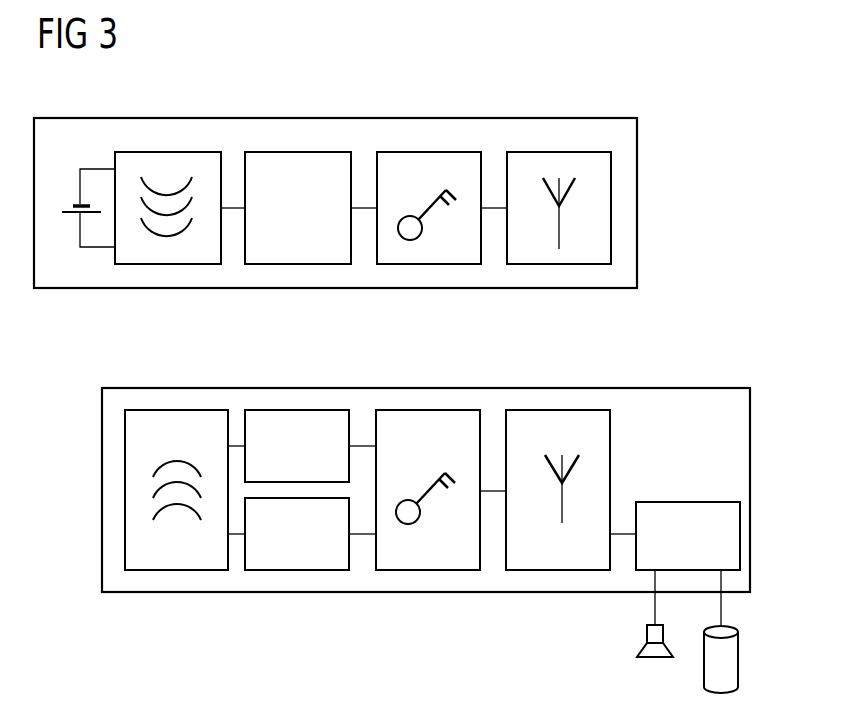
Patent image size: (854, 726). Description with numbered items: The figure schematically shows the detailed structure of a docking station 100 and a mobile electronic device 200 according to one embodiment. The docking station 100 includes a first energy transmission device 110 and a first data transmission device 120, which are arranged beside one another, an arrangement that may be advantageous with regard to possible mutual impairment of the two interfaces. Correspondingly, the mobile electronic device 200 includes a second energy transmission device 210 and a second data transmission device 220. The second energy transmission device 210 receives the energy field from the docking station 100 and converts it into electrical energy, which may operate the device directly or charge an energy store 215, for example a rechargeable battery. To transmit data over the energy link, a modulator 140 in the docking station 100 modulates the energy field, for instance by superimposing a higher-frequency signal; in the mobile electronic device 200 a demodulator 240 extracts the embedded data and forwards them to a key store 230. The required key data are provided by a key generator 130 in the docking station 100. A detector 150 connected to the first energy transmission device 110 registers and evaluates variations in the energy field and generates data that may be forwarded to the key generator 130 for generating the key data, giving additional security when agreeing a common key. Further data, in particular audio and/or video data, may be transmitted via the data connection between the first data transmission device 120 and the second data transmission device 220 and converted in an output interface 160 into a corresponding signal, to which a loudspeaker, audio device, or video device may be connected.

The docking station 100 is at (750, 490).
The first energy transmission device 110 is at (178, 410).
The first data transmission device 120 is at (561, 410).
The key generator 130 is at (428, 410).
The modulator 140 is at (299, 410).
The detector 150 is at (297, 570).
The output interface 160 is at (688, 502).
The mobile electronic device 200 is at (637, 194).
The second energy transmission device 210 is at (168, 152).
The energy store 215 is at (78, 216).
The second data transmission device 220 is at (559, 152).
The key store 230 is at (428, 152).
The demodulator 240 is at (298, 152).